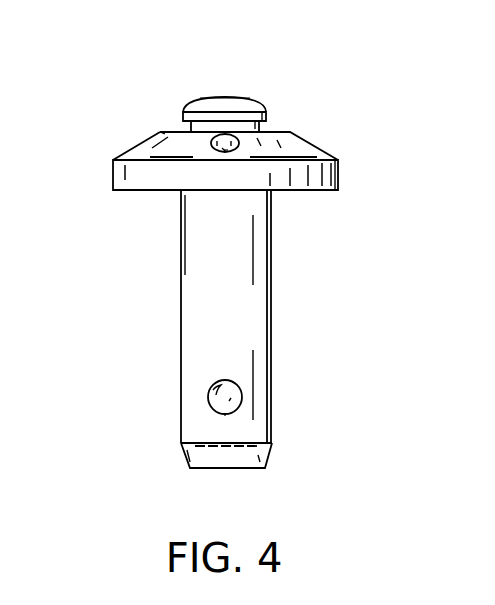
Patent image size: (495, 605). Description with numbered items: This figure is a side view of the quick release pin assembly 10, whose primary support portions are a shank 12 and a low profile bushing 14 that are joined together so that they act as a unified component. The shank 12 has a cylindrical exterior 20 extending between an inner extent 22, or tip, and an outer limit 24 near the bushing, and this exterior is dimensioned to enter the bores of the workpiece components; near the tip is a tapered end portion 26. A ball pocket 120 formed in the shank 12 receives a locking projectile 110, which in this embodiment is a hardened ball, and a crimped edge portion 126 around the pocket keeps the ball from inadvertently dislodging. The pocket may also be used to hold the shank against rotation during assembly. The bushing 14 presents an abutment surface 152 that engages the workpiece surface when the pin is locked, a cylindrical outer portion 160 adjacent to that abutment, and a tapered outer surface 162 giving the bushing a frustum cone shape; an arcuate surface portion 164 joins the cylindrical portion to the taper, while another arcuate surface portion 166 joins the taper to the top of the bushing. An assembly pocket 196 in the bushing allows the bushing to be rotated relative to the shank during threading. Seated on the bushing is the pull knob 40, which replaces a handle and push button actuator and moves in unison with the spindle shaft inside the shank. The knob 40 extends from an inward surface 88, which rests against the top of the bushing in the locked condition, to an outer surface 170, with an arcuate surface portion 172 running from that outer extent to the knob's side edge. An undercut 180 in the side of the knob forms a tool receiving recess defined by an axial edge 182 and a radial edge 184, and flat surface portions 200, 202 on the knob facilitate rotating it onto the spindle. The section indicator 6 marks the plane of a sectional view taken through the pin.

The section line 6- 6 is at (226, 97).
The quick release pin assembly 10 is at (357, 83).
The shank 12 is at (268, 287).
The bushing 14 is at (332, 148).
The exterior 20 is at (272, 337).
The inner extent 22 is at (270, 445).
The outer limit 24 is at (272, 198).
The tapered end portion 26 is at (190, 455).
The knob 40 is at (196, 108).
The inward surface 88 is at (205, 134).
The projectile 110 is at (232, 397).
The ball pocket 120 is at (212, 386).
The crimped edge portion 126 is at (211, 411).
The abutment surface 152 is at (140, 193).
The outer portion 160 is at (112, 172).
The outer surface 162 is at (143, 140).
The arcuate surface portion 164 is at (115, 160).
The arcuate surface portion 166 is at (160, 128).
The outer surface 170 is at (236, 98).
The arcuate surface portion 172 is at (214, 108).
The undercut 180 is at (264, 128).
The axial edge 182 is at (160, 135).
The radial edge 184 is at (226, 150).
The assembly pocket 196 is at (224, 150).
The flat surface portion 200 is at (186, 128).
The flat surface portion 202 is at (267, 117).